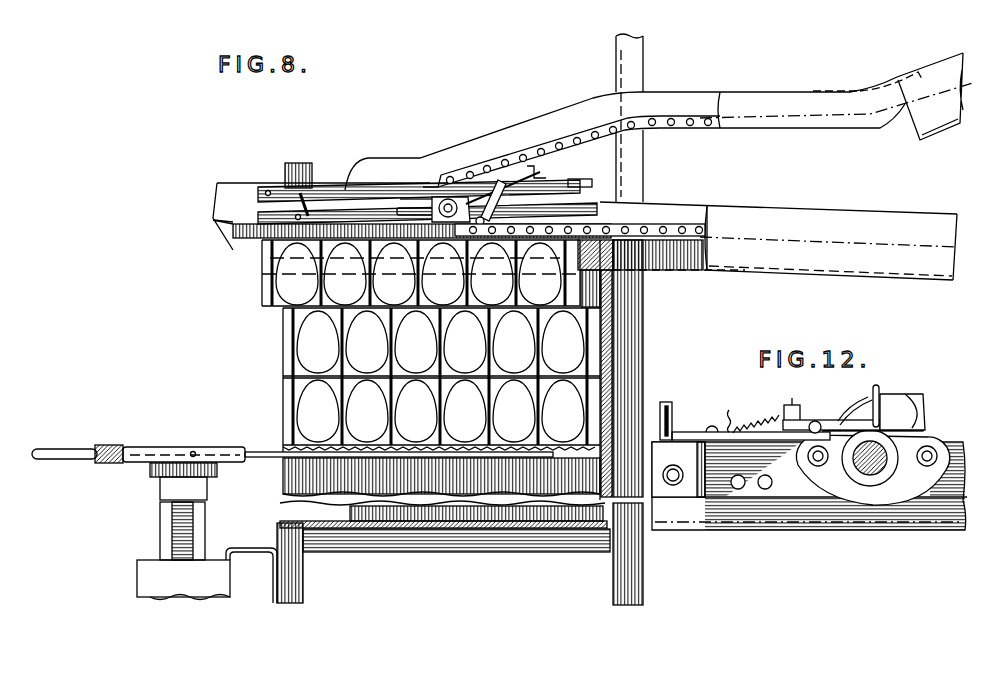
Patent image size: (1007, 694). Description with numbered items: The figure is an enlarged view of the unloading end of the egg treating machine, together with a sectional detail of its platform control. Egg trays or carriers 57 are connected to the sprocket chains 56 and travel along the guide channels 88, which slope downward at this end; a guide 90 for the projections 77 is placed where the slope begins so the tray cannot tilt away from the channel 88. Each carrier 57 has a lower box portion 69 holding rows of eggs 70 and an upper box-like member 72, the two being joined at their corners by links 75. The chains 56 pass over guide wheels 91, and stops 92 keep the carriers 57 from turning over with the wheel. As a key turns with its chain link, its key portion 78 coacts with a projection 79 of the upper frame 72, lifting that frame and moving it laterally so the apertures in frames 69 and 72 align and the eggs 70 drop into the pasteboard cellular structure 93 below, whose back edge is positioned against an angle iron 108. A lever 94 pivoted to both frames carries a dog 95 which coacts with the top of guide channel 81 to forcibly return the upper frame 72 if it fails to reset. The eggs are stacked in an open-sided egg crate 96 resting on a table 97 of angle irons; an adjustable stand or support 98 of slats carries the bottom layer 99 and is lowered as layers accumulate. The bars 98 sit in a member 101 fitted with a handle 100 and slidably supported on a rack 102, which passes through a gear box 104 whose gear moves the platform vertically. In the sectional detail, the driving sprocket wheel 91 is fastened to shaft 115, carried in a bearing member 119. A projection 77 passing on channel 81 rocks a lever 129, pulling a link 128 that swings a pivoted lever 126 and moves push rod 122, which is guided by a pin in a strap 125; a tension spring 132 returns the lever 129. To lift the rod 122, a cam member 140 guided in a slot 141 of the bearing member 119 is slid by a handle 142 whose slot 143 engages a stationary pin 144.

In FIG. 8, the stops 92 is at (286, 166).
In FIG. 8, the egg tray or carrier 57 is at (333, 190).
In FIG. 8, the links 75 is at (303, 208).
In FIG. 8, the box portion 69 is at (583, 205).
In FIG. 8, the box-like member 72 is at (585, 181).
In FIG. 8, the projections 77 is at (392, 207).
In FIG. 8, the projection 79 is at (405, 204).
In FIG. 8, the key portion 78 is at (433, 196).
In FIG. 8, the guide wheels 91 is at (476, 195).
In FIG. 12, the guide wheels 91 is at (903, 410).
In FIG. 8, the lever 94 is at (500, 182).
In FIG. 8, the dog 95 is at (480, 226).
In FIG. 8, the guide channels 88 is at (672, 129).
In FIG. 8, the guide 90 is at (851, 94).
In FIG. 8, the sprocket chains 56 is at (661, 229).
In FIG. 8, the angle iron 108 is at (625, 263).
In FIG. 8, the pasteboard cellular structure 93 is at (263, 270).
In FIG. 8, the eggs 70 is at (285, 292).
In FIG. 8, the bottom layer 99 is at (297, 410).
In FIG. 8, the stand or support 98 is at (262, 452).
In FIG. 8, the egg crate 96 is at (287, 482).
In FIG. 8, the table or support 97 is at (277, 540).
In FIG. 8, the handle 100 is at (68, 455).
In FIG. 8, the member 101 is at (108, 453).
In FIG. 8, the rack 102 is at (170, 517).
In FIG. 8, the gear box 104 is at (147, 567).
In FIG. 12, the channels 81 is at (808, 519).
In FIG. 12, the bearing member 119 is at (840, 485).
In FIG. 12, the shaft 115 is at (858, 462).
In FIG. 12, the handle 142 is at (752, 440).
In FIG. 12, the stationary pin 144 is at (712, 427).
In FIG. 12, the slot 143 is at (733, 409).
In FIG. 12, the tension spring 132 is at (748, 427).
In FIG. 12, the link 128 is at (788, 408).
In FIG. 12, the lever 129 is at (800, 424).
In FIG. 12, the pivoted lever 126 is at (847, 410).
In FIG. 12, the push rod 122 is at (879, 392).
In FIG. 12, the strap 125 is at (867, 384).
In FIG. 12, the slot 141 is at (900, 397).
In FIG. 12, the cam member 140 is at (910, 425).